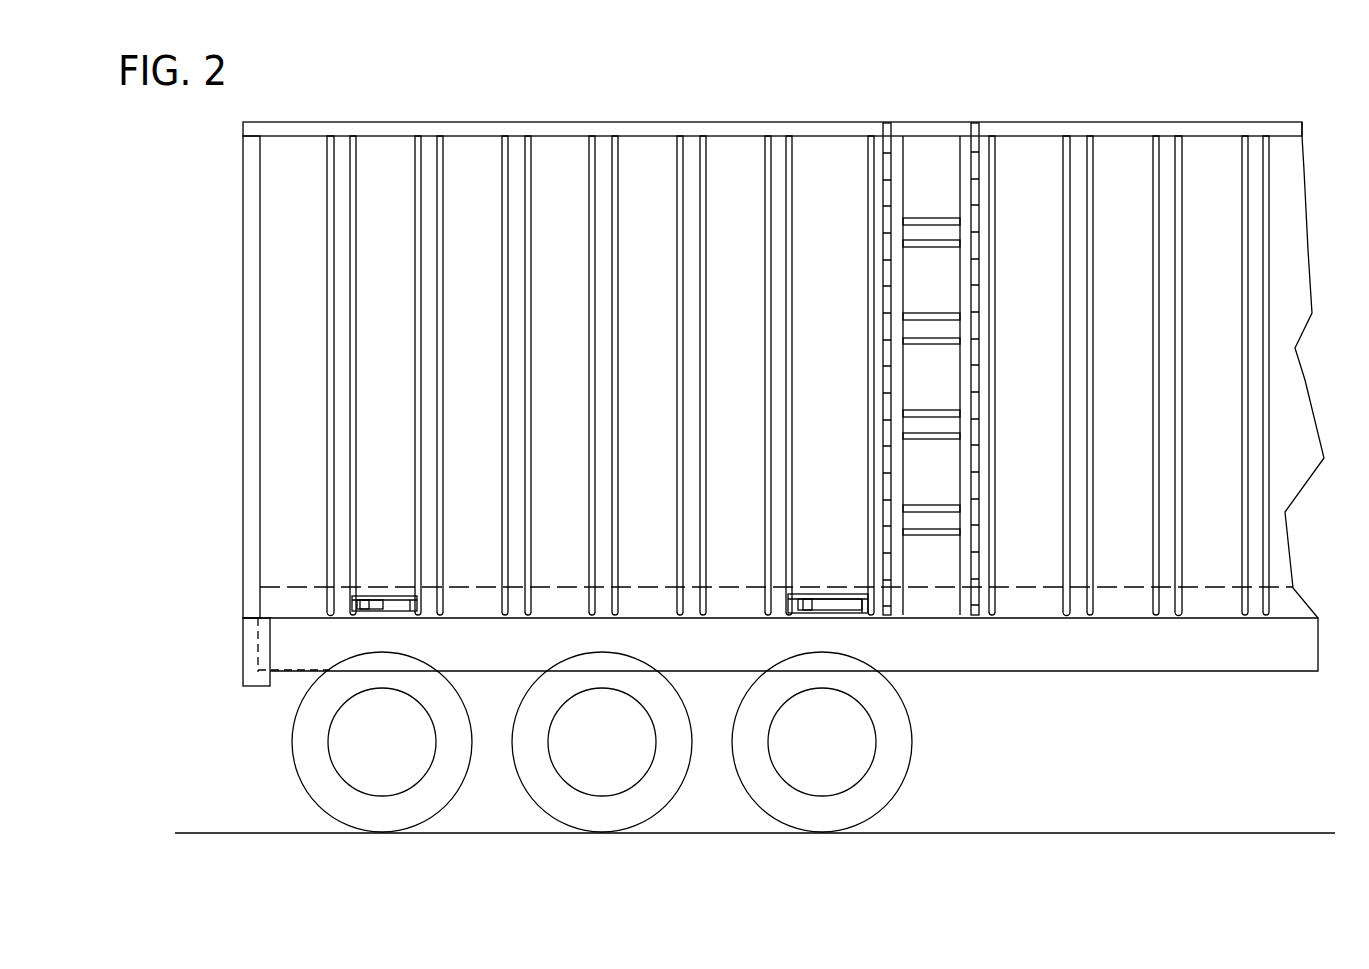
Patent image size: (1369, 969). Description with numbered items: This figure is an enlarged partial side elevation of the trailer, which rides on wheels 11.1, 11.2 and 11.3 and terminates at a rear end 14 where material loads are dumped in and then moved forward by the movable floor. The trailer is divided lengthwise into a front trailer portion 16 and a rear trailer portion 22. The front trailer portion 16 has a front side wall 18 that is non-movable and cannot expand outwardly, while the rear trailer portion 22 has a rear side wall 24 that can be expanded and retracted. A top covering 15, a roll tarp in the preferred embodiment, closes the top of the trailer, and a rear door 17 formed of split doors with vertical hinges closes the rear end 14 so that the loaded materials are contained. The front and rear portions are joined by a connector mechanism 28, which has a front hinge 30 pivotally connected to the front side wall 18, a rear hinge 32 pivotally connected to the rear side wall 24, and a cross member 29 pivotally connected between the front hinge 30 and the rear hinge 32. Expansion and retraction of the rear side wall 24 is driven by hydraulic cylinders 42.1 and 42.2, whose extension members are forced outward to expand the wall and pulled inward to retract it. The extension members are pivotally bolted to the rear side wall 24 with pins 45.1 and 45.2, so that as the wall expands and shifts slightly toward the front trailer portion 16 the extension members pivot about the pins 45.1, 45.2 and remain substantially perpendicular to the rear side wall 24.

The wheel 11.1 is at (447, 805).
The wheel 11.2 is at (658, 812).
The wheel 11.3 is at (873, 819).
The rear end 14 is at (215, 218).
The top covering 15 is at (382, 122).
The front trailer portion 16 is at (1158, 115).
The rear door 17 is at (243, 402).
The front side wall 18 is at (1213, 192).
The rear trailer portion 22 is at (542, 114).
The rear side wall 24 is at (633, 200).
The connector mechanism 28 is at (934, 327).
The cross member 29 is at (932, 175).
The front hinge 30 is at (975, 123).
The rear hinge 32 is at (888, 123).
The cylinder 42.1 is at (378, 605).
The cylinder 42.2 is at (808, 607).
The pin 45.1 is at (377, 597).
The pin 45.2 is at (805, 595).